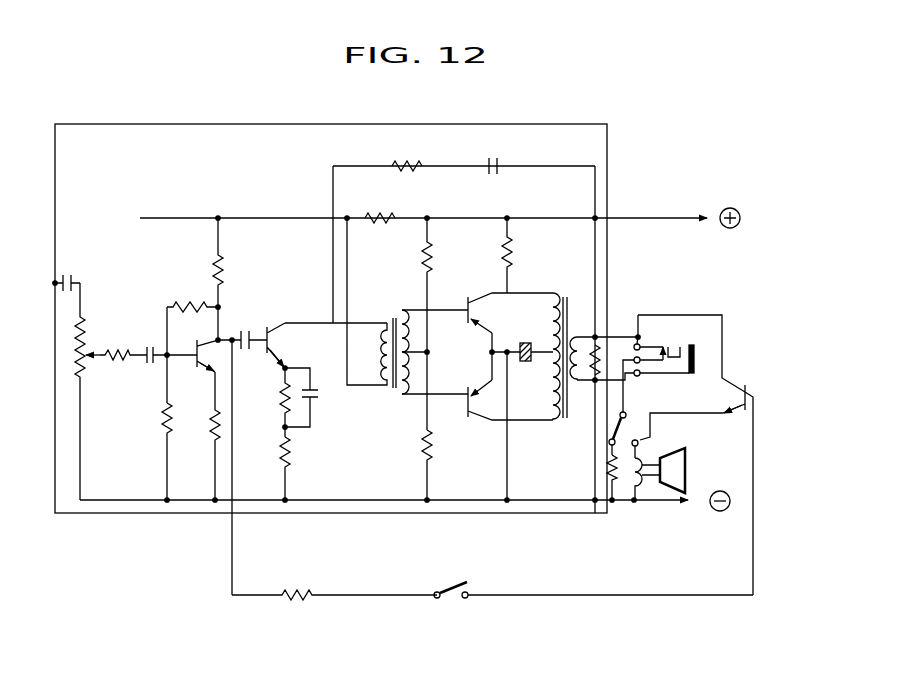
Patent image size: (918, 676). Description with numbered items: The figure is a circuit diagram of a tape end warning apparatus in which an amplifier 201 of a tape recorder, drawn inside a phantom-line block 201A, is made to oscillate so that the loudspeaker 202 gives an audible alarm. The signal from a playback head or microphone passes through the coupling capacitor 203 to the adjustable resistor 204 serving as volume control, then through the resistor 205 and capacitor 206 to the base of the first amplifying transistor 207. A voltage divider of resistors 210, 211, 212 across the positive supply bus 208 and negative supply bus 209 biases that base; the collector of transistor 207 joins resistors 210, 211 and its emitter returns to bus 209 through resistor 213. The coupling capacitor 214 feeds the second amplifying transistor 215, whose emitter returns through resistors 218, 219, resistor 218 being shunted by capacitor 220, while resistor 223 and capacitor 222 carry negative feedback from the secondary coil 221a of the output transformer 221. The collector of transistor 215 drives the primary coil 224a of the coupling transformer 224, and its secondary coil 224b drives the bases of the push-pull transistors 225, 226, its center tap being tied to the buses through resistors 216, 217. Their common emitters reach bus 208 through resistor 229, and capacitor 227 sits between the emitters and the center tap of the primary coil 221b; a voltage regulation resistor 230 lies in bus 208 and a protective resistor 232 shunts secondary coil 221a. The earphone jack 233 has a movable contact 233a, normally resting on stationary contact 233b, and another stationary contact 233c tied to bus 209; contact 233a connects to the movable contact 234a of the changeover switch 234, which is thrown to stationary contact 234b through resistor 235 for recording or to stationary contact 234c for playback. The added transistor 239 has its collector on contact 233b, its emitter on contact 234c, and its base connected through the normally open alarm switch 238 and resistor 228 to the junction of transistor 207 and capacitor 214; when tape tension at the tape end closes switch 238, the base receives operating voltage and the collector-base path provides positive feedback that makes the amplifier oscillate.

The amplifier 201 is at (286, 145).
The block 201A is at (608, 166).
The loudspeaker 202 is at (688, 470).
The coupling capacitor 203 is at (72, 285).
The adjustable resistor 204 is at (88, 333).
The resistor 205 is at (120, 369).
The capacitor 206 is at (150, 364).
The first amplifying transistor 207 is at (201, 367).
The positive supply bus 208 is at (679, 218).
The negative supply bus 209 is at (673, 504).
The resistor 210 is at (222, 268).
The resistor 211 is at (185, 310).
The resistor 212 is at (163, 425).
The resistor 213 is at (212, 432).
The coupling capacitor 214 is at (243, 320).
The second amplifying transistor 215 is at (289, 331).
The resistor 216 is at (430, 257).
The resistor 217 is at (430, 446).
The resistor 218 is at (282, 397).
The resistor 219 is at (282, 442).
The capacitor 220 is at (312, 386).
The output transformer 221 is at (573, 330).
The secondary coil 221a is at (586, 332).
The primary coil 221b is at (553, 299).
The capacitor 222 is at (494, 160).
The resistor 223 is at (400, 163).
The coupling transformer 224 is at (393, 395).
The primary coil 224a is at (386, 372).
The secondary coil 224b is at (404, 318).
The push-pull transistor 225 is at (495, 322).
The push-pull transistor 226 is at (466, 396).
The capacitor 227 is at (525, 362).
The resistor 228 is at (288, 597).
The resistor 229 is at (512, 257).
The voltage regulation resistor 230 is at (378, 214).
The protective resistor 232 is at (593, 398).
The earphone jack 233 is at (722, 315).
The movable contact 233a is at (639, 334).
The stationary contact 233b is at (692, 336).
The stationary contact 233c is at (643, 378).
The record/playback changeover switch 234 is at (646, 440).
The movable contact 234a is at (627, 414).
The stationary contact 234b is at (609, 445).
The stationary contact 234c is at (646, 453).
The resistor 235 is at (613, 503).
The alarm switch 238 is at (440, 590).
The transistor 239 is at (744, 386).